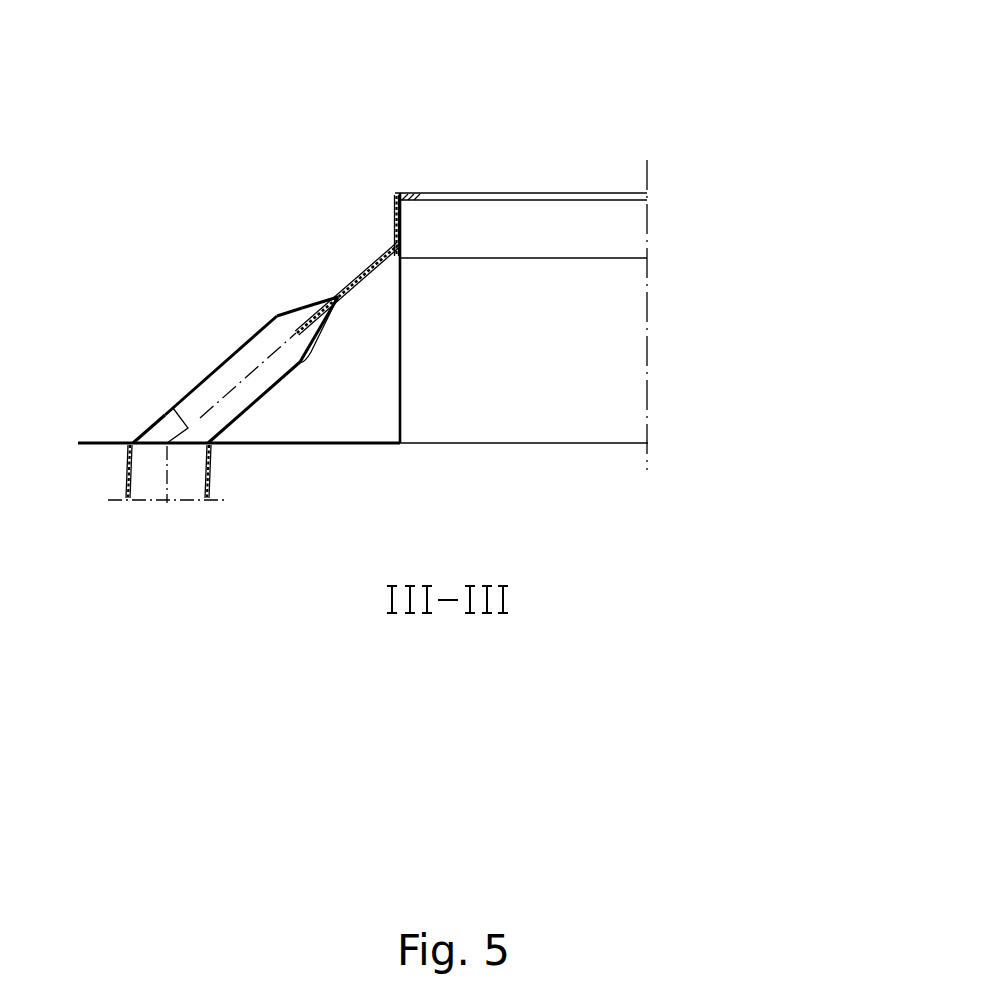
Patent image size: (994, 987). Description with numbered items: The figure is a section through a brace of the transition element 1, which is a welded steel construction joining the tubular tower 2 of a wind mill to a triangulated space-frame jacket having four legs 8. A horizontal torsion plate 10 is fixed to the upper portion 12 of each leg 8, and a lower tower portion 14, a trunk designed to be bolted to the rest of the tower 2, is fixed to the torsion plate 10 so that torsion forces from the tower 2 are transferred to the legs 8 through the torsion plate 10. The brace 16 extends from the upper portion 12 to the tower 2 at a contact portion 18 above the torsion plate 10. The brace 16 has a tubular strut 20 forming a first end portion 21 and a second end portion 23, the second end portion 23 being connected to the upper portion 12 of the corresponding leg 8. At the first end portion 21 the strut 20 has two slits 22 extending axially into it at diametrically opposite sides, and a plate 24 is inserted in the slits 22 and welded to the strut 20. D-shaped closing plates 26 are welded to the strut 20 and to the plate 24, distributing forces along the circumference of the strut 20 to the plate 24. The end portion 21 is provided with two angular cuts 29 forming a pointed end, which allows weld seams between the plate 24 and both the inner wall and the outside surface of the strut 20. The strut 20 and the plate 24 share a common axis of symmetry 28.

The transition element 1 is at (308, 130).
The tower 2 is at (456, 188).
The leg 8 is at (213, 477).
The torsion plate 10 is at (100, 443).
The upper portion 12 is at (125, 467).
The lower tower portion 14 is at (400, 420).
The brace 16 is at (206, 368).
The contact portion 18 is at (397, 243).
The tubular strut 20 is at (198, 385).
The first end portion 21 is at (272, 324).
The slit 22 is at (303, 313).
The second end portion 23 is at (143, 432).
The plate 24 is at (365, 270).
The D-shaped closing plate 26 is at (308, 305).
The axis of symmetry 28 is at (173, 408).
The angular cut 29 is at (296, 362).